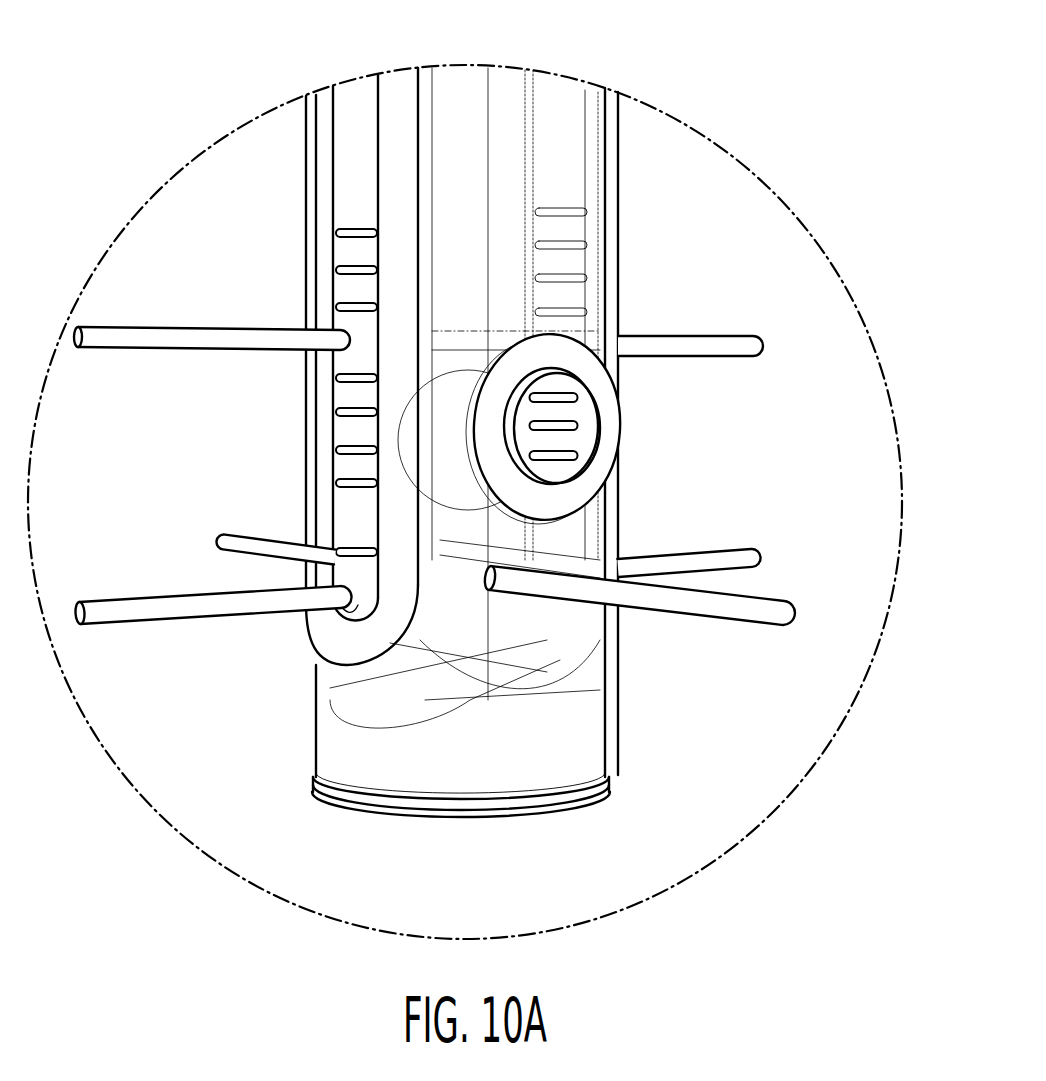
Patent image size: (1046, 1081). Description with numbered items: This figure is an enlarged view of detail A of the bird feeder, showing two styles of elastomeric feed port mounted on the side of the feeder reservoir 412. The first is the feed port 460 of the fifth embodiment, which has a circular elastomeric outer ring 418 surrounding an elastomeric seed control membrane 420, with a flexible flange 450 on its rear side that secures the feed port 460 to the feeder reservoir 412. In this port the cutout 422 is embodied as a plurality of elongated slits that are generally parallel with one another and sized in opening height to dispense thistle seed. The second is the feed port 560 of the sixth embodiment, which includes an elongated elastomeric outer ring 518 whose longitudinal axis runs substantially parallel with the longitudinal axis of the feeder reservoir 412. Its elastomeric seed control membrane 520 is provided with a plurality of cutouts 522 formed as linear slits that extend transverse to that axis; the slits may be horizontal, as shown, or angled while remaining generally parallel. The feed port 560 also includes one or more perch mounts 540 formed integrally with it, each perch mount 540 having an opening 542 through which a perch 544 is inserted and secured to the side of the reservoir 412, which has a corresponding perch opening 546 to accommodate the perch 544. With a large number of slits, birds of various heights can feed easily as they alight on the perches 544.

The detail A is at (682, 128).
The feeder reservoir 412 is at (607, 678).
The circular elastomeric outer ring 418 is at (606, 373).
The elastomeric seed control membrane 420 is at (566, 437).
The cutout 422 is at (576, 417).
The flexible flange 450 is at (477, 386).
The feed port 460 is at (619, 387).
The elongated elastomeric outer ring 518 is at (405, 132).
The elastomeric seed control membrane 520 is at (348, 502).
The cutouts 522 is at (338, 408).
The perch mount 540 is at (340, 612).
The opening 542 is at (337, 570).
The perch 544 is at (138, 605).
The perch opening 546 is at (563, 570).
The feed port 560 is at (323, 358).